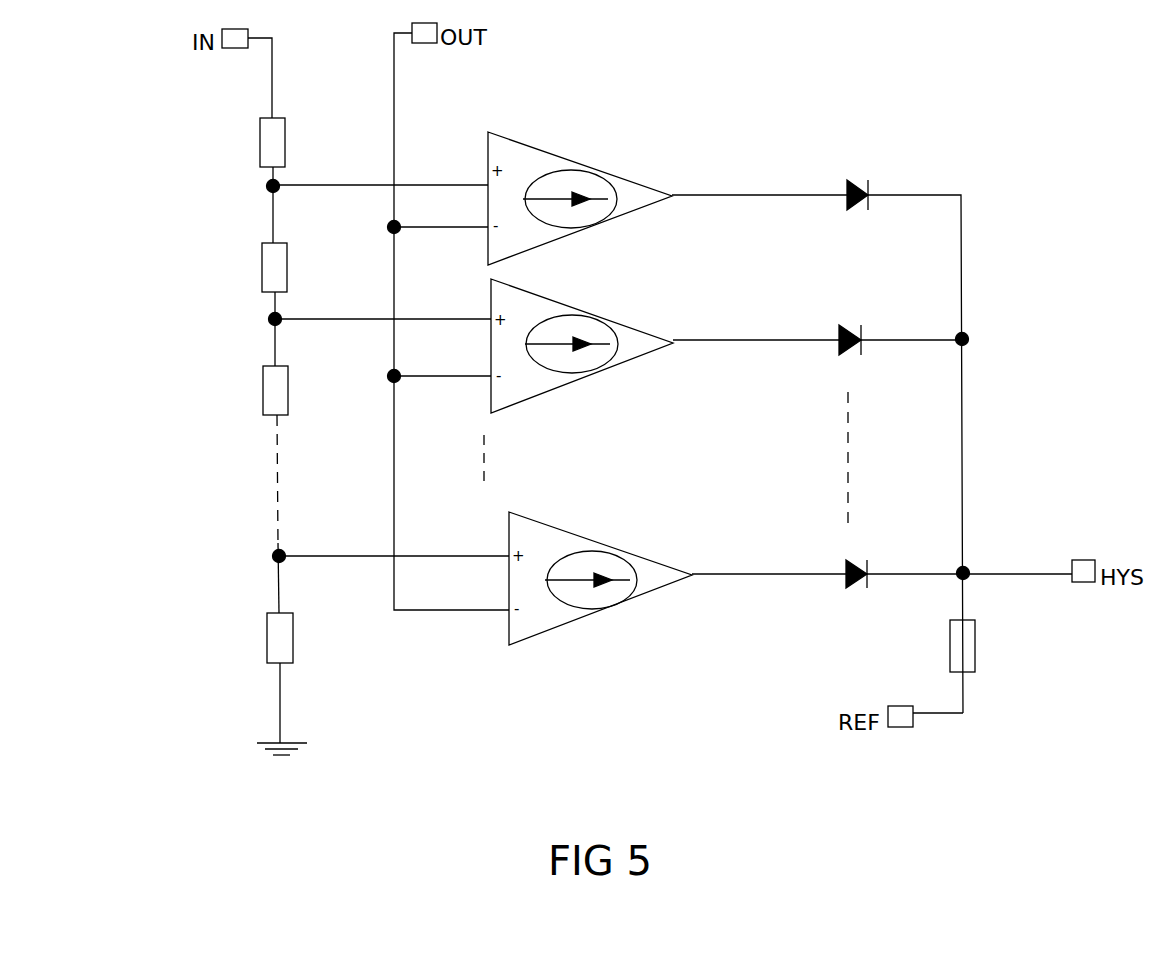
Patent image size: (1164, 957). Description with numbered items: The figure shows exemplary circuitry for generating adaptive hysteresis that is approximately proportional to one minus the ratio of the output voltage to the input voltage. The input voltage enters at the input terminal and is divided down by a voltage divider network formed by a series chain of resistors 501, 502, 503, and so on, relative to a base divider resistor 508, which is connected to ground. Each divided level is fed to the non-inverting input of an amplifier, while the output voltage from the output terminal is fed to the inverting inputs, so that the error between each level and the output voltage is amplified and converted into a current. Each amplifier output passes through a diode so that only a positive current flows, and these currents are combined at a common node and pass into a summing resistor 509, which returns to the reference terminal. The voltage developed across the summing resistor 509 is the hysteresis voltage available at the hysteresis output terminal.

The resistor 501 is at (294, 142).
The resistor 502 is at (296, 267).
The resistor 503 is at (297, 390).
The base divider resistor 508 is at (302, 638).
The summing resistor 509 is at (984, 646).